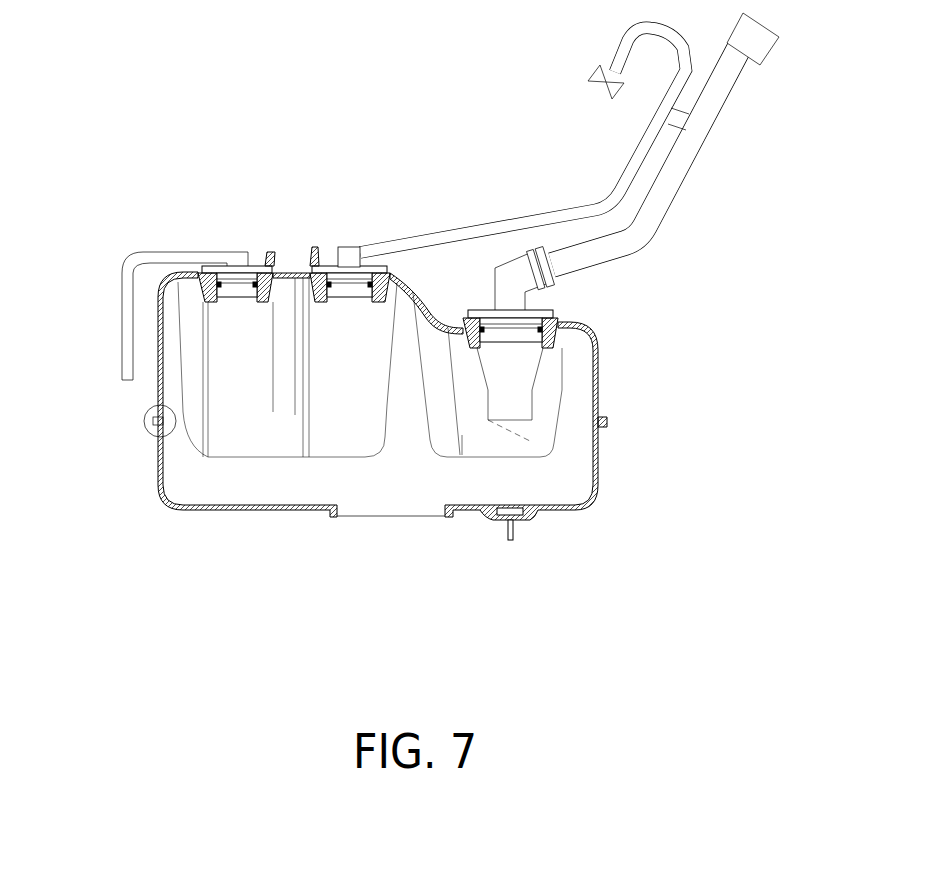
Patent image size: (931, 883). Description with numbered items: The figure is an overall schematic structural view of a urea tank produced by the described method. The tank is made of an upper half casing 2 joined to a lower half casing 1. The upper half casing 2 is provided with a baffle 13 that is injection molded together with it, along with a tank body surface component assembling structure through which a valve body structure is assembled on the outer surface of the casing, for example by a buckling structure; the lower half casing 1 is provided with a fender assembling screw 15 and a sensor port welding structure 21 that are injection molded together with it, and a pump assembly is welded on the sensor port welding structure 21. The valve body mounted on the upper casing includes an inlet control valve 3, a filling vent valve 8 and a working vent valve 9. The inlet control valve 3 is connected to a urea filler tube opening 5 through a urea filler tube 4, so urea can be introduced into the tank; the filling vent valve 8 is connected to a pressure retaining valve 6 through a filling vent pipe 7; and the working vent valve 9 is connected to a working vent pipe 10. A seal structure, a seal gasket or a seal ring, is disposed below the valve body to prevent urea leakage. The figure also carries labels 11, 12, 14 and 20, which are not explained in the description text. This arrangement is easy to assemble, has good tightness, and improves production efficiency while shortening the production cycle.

The lower half casing 1 is at (402, 471).
The upper half casing 2 is at (600, 392).
The inlet control valve 3 is at (528, 276).
The urea filler tube 4 is at (668, 198).
The urea filler tube opening 5 is at (753, 42).
The pressure retaining valve 6 is at (606, 82).
The filling vent pipe 7 is at (555, 213).
The filling vent valve 8 is at (343, 262).
The working vent valve 9 is at (160, 267).
The working vent pipe 10 is at (132, 277).
The seal clamp 11 is at (203, 288).
The second flange assembly 12 is at (318, 300).
The baffle 13 is at (428, 353).
The third flange assembly 14 is at (470, 345).
The fender assembling screw 15 is at (511, 523).
The nut 20 is at (157, 425).
The sensor port welding structure 21 is at (427, 517).